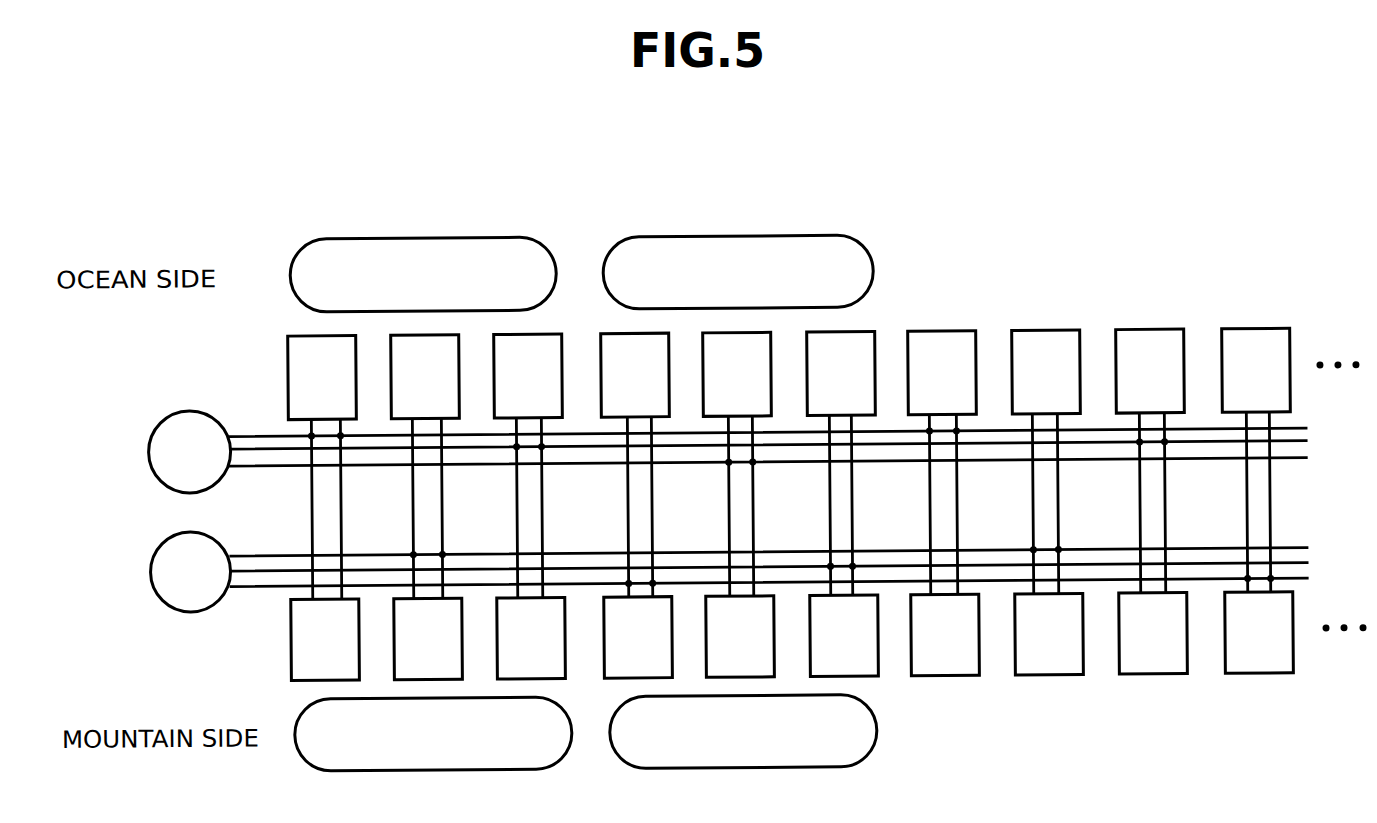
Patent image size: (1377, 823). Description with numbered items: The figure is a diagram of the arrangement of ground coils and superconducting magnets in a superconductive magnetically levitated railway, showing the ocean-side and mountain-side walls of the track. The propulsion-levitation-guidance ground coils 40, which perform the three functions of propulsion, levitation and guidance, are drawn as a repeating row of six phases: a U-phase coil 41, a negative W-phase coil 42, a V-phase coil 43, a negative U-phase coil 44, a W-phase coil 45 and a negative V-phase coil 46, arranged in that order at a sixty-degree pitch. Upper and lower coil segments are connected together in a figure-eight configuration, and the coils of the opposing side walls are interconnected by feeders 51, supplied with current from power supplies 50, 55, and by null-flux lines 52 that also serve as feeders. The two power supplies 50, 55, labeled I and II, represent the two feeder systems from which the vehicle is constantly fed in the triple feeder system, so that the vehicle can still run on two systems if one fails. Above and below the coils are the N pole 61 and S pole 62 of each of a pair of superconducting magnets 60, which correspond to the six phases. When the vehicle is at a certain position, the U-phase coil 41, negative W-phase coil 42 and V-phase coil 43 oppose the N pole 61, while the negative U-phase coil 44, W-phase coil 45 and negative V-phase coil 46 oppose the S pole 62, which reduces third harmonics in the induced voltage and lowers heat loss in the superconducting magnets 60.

The propulsion-levitation-guidance ground coils 40 is at (1147, 301).
The U-phase coil 41 is at (330, 333).
The negative W-phase coil 42 is at (433, 333).
The V-phase coil 43 is at (536, 333).
The negative U-phase coil 44 is at (643, 333).
The W-phase coil 45 is at (745, 333).
The negative V-phase coil 46 is at (849, 333).
The power supply 50 is at (163, 417).
The feeders 51 is at (257, 433).
The null-flux lines 52 is at (313, 510).
The power supply 55 is at (156, 548).
The superconducting magnets 60 is at (598, 236).
The N pole 61 is at (447, 236).
The S pole 62 is at (785, 237).